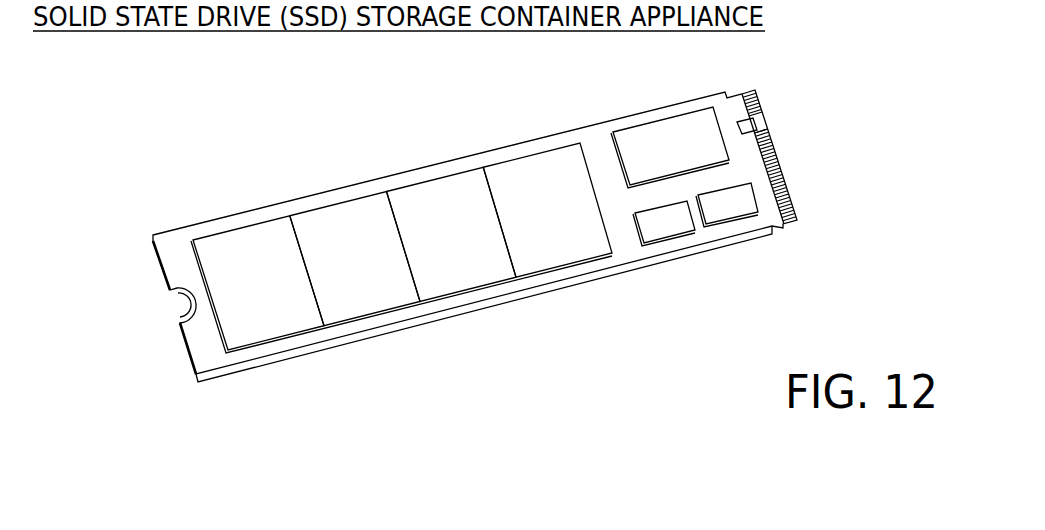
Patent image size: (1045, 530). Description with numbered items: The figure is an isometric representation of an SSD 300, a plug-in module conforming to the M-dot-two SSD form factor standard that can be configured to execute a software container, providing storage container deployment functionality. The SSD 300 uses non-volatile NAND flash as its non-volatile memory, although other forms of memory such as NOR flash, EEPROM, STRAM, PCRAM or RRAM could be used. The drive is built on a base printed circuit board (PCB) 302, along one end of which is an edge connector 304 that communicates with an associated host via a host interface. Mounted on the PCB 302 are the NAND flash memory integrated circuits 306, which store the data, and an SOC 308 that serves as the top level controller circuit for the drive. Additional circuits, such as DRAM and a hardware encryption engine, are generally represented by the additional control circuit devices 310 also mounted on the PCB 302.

The SSD 300 is at (236, 134).
The base printed circuit board (PCB) 302 is at (628, 252).
The edge connector 304 is at (798, 162).
The NAND flash memory integrated circuits 306 is at (437, 200).
The SOC 308 is at (668, 135).
The additional control circuit devices 310 is at (709, 244).